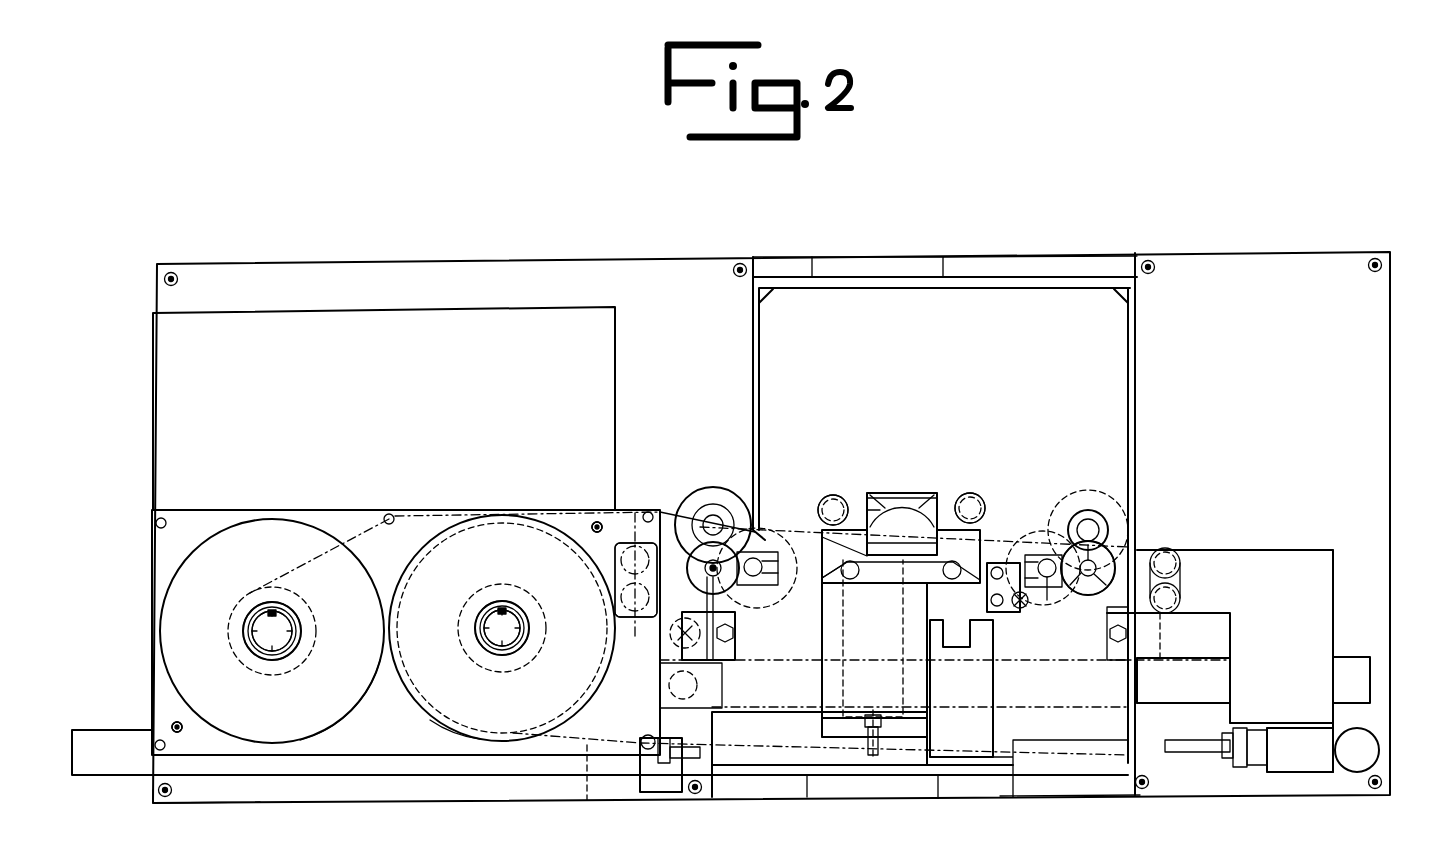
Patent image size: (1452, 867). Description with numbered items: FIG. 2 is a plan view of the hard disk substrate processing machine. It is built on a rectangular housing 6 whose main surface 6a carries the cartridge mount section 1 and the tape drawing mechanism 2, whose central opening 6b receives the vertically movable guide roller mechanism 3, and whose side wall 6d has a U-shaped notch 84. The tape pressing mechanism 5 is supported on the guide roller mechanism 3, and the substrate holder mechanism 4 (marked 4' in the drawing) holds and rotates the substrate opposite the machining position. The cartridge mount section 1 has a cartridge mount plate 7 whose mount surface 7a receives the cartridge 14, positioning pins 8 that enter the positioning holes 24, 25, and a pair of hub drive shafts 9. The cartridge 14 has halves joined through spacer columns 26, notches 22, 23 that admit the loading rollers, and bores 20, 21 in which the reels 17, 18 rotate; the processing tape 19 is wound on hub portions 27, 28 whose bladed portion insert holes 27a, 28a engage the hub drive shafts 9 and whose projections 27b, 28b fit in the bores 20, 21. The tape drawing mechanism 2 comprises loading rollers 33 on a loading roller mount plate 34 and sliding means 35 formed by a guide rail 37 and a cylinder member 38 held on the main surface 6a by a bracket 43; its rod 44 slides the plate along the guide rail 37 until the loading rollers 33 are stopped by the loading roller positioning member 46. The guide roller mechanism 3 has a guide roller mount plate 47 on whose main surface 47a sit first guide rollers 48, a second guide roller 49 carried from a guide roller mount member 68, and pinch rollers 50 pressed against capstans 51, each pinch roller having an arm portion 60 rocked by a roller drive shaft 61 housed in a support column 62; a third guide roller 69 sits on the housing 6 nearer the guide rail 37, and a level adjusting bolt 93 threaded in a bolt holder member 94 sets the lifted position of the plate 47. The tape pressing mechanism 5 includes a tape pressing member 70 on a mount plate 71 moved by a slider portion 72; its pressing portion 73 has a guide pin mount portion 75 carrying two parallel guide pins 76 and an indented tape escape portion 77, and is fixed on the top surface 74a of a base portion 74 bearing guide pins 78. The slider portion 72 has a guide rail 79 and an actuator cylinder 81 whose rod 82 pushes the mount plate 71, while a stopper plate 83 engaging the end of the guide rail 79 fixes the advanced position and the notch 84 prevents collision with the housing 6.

The cartridge mount section 1 is at (163, 450).
The tape drawing mechanism 2 is at (1322, 597).
The guide roller mechanism 3 is at (745, 735).
The substrate holder mechanism 4 is at (1300, 750).
The motor 4' is at (1300, 786).
The tape pressing mechanism 5 is at (962, 478).
The housing 6 is at (240, 275).
The main surface 6a is at (238, 795).
The opening 6b is at (770, 300).
The side wall 6d is at (1080, 797).
The cartridge mount plate 7 is at (160, 380).
The cartridge mount surface 7a is at (163, 480).
The positioning pins 8 is at (592, 525).
The hub drive shafts 9 is at (267, 645).
The cartridge 14 is at (160, 556).
The tape reel 17 is at (333, 700).
The tape reel 18 is at (443, 707).
The processing tape 19 is at (590, 745).
The bore 20 is at (286, 616).
The bore 21 is at (520, 618).
The notch 22 is at (623, 543).
The notch 23 is at (636, 580).
The positioning hole 24 is at (595, 527).
The positioning hole 25 is at (387, 627).
The spacer column 26 is at (390, 514).
The hub portion 27 is at (228, 620).
The bladed portion insert hole 27a is at (293, 650).
The projection 27b is at (280, 652).
The hub portion 28 is at (476, 655).
The bladed portion insert hole 28a is at (505, 650).
The projection 28b is at (520, 640).
The loading rollers 33 is at (1180, 590).
The loading roller mount plate 34 is at (1275, 565).
The sliding means 35 is at (1213, 697).
The guide rail 37 is at (1168, 692).
The cylinder member 38 is at (100, 765).
The bracket 43 is at (668, 780).
The rod 44 is at (1193, 745).
The loading roller positioning member 46 is at (1372, 752).
The guide roller mount plate 47 is at (995, 308).
The main surface 47a is at (905, 308).
The first guide rollers 48 is at (833, 495).
The second guide roller 49 is at (1022, 606).
The pinch rollers 50 is at (697, 565).
The capstans 51 is at (713, 522).
The arm portion 60 is at (1067, 590).
The roller drive shaft 61 is at (753, 560).
The support column 62 is at (1048, 600).
The guide roller mount member 68 is at (1005, 612).
The third guide roller 69 is at (735, 650).
The tape pressing member 70 is at (863, 517).
The mount plate 71 is at (822, 668).
The slider portion 72 is at (912, 712).
The pressing portion 73 is at (902, 520).
The base portion 74 is at (985, 545).
The top surface 74a is at (850, 573).
The guide pin mount portion 75 is at (872, 505).
The guide pins 76 is at (885, 510).
The tape escape portion 77 is at (822, 533).
The guide pins 78 is at (851, 580).
The guide rail 79 is at (847, 693).
The actuator cylinder 81 is at (967, 723).
The rod 82 is at (960, 650).
The stopper plate 83 is at (873, 745).
The notch 84 is at (808, 780).
The level adjusting bolt 93 is at (733, 633).
The bolt holder member 94 is at (722, 665).